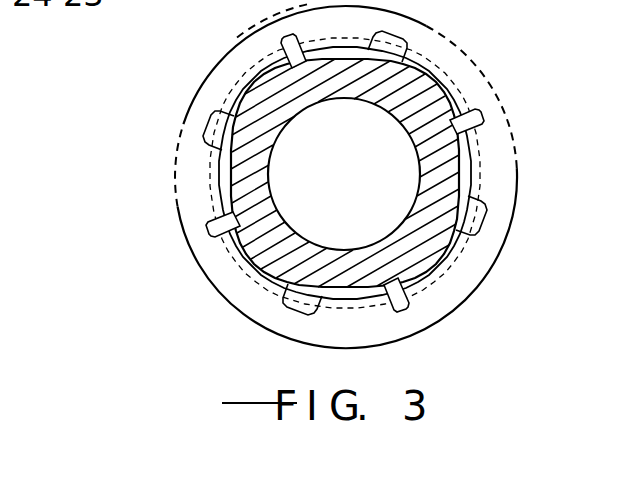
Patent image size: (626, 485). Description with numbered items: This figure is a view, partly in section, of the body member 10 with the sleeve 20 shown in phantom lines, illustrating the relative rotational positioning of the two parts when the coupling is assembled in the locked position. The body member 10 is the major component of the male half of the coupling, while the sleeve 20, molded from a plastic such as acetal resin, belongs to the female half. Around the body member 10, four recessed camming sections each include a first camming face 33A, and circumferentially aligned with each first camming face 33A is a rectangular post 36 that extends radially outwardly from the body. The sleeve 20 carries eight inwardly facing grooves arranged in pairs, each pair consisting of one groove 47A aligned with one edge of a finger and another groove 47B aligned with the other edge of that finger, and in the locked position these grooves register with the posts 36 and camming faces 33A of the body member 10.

The body member 10 is at (449, 257).
The sleeve 20 is at (524, 133).
The first camming face 33A is at (155, 16).
The rectangular post 36 is at (405, 302).
The groove 47A is at (392, 314).
The groove 47B is at (275, 301).